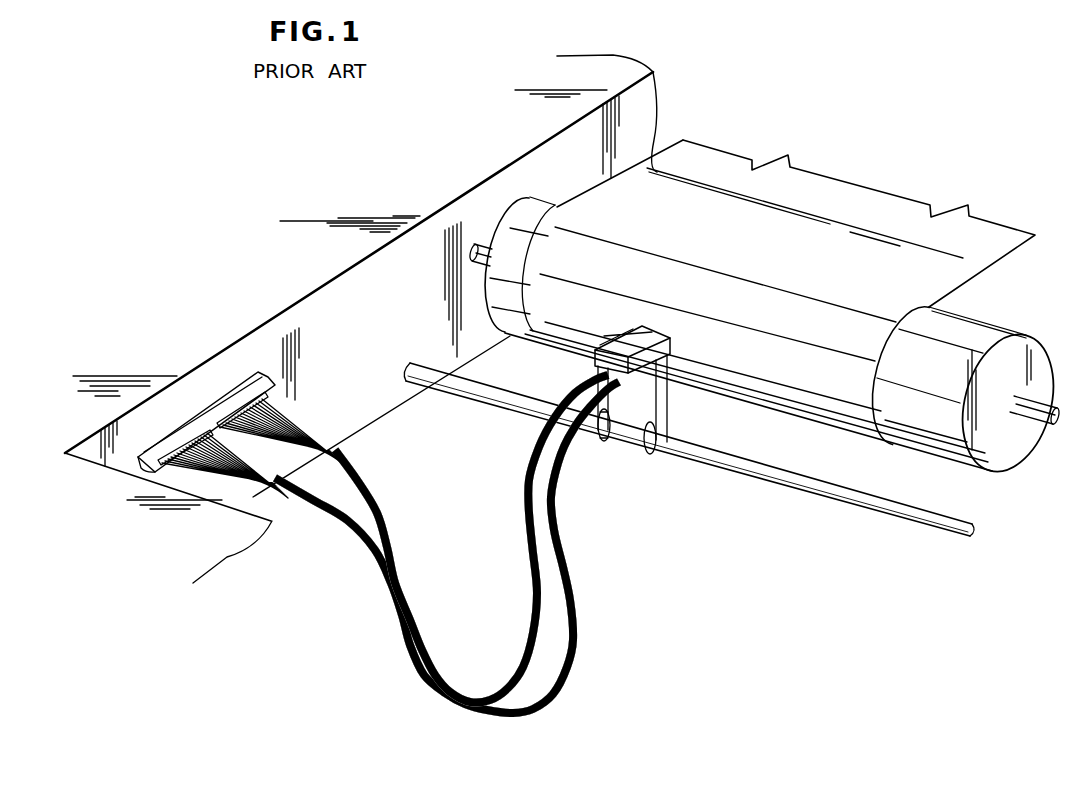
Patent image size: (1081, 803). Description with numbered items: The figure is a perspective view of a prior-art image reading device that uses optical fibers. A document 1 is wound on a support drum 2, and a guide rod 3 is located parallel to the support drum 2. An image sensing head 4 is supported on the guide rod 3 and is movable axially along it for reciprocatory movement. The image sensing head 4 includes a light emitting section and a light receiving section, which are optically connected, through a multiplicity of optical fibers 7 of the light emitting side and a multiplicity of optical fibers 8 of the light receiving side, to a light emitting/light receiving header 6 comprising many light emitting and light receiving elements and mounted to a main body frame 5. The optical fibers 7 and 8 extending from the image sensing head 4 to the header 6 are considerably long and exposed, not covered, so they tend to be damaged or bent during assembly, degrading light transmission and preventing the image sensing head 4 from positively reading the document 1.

The document 1 is at (837, 192).
The support drum 2 is at (980, 330).
The guide rod 3 is at (852, 496).
The image sensing head 4 is at (668, 407).
The main body frame 5 is at (645, 113).
The light emitting/light receiving header 6 is at (207, 408).
The optical fibers of the light emitting side 7 is at (380, 524).
The optical fibers of the light receiving side 8 is at (360, 532).